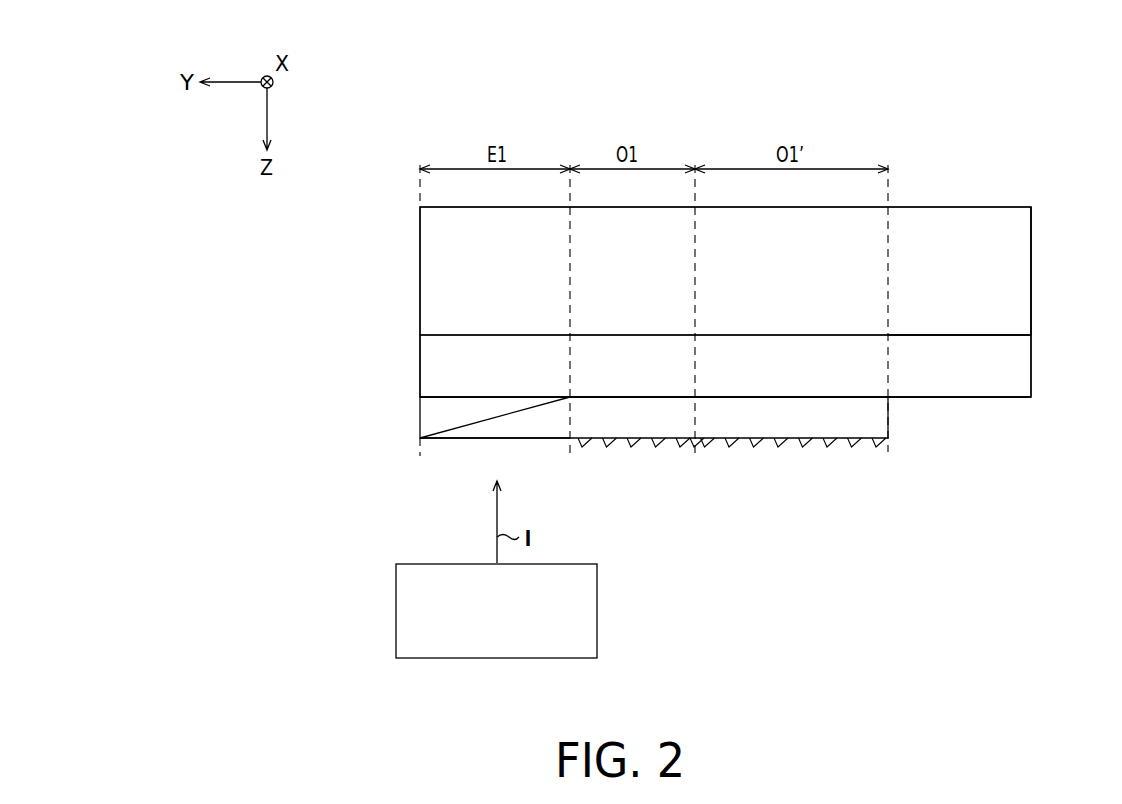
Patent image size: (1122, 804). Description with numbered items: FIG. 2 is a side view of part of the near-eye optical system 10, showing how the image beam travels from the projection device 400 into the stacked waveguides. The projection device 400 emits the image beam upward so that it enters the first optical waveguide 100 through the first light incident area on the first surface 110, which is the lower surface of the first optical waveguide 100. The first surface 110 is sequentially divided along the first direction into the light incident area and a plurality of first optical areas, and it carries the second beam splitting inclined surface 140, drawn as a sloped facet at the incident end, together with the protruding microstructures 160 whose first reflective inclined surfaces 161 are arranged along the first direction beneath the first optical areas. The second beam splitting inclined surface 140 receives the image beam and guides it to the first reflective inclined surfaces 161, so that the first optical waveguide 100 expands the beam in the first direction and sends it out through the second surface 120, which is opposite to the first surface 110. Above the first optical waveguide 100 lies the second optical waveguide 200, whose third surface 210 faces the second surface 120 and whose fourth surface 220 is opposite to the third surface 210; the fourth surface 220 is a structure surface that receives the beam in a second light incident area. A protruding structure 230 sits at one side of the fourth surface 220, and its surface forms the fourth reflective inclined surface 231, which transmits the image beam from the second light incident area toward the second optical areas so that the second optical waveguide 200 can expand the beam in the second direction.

The near-eye optical system 10 is at (991, 104).
The first optical waveguide 100 is at (883, 420).
The first surface 110 is at (448, 451).
The second surface 120 is at (620, 409).
The second beam splitting inclined surface 140 is at (552, 413).
The protruding microstructures 160 is at (735, 447).
The first reflective inclined surfaces 161 is at (699, 457).
The second optical waveguide 200 is at (1027, 365).
The third surface 210 is at (1024, 409).
The fourth surface 220 is at (974, 347).
The protruding structure 230 is at (1027, 277).
The fourth reflective inclined surface 231 is at (1004, 250).
The projection device 400 is at (597, 612).